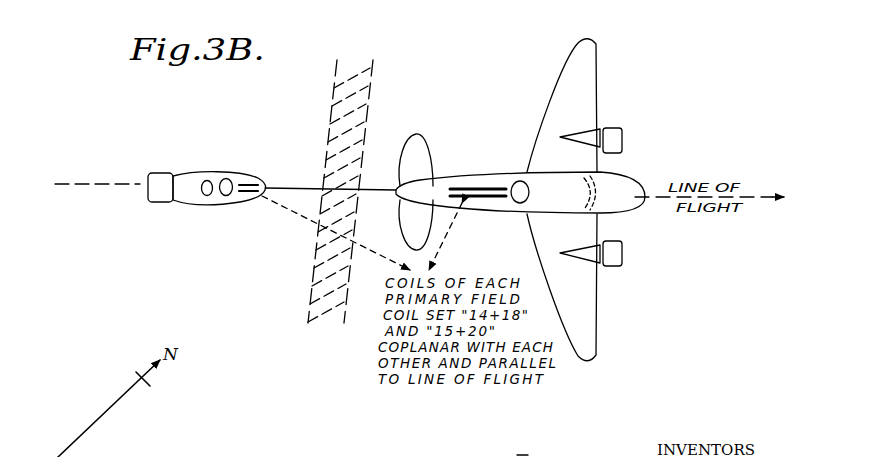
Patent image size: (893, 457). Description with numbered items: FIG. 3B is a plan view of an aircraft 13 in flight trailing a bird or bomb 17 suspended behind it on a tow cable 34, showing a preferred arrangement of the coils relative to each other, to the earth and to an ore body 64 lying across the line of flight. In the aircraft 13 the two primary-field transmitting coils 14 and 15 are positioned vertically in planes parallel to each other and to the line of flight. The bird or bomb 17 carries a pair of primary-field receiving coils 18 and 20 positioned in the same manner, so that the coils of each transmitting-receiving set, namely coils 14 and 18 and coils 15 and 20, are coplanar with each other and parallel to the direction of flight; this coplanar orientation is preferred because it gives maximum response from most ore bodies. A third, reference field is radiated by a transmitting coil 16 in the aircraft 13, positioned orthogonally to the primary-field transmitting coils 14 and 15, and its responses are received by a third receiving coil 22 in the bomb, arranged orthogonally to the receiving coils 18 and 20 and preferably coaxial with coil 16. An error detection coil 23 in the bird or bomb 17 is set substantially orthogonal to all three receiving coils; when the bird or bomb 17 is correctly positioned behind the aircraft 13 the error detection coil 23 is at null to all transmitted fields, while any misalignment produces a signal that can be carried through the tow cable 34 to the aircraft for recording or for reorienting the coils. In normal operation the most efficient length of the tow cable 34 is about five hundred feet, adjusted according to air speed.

The aircraft 13 is at (596, 44).
The transmitting coil 14 is at (488, 188).
The transmitting coil 15 is at (488, 188).
The transmitting coil 16 is at (529, 192).
The bird or bomb 17 is at (190, 204).
The primary-field receiving coil 18 is at (251, 183).
The primary-field receiving coil 20 is at (253, 193).
The receiving coil 22 is at (230, 178).
The error detection coil 23 is at (207, 180).
The tow cable 34 is at (373, 186).
The ore body 64 is at (366, 104).